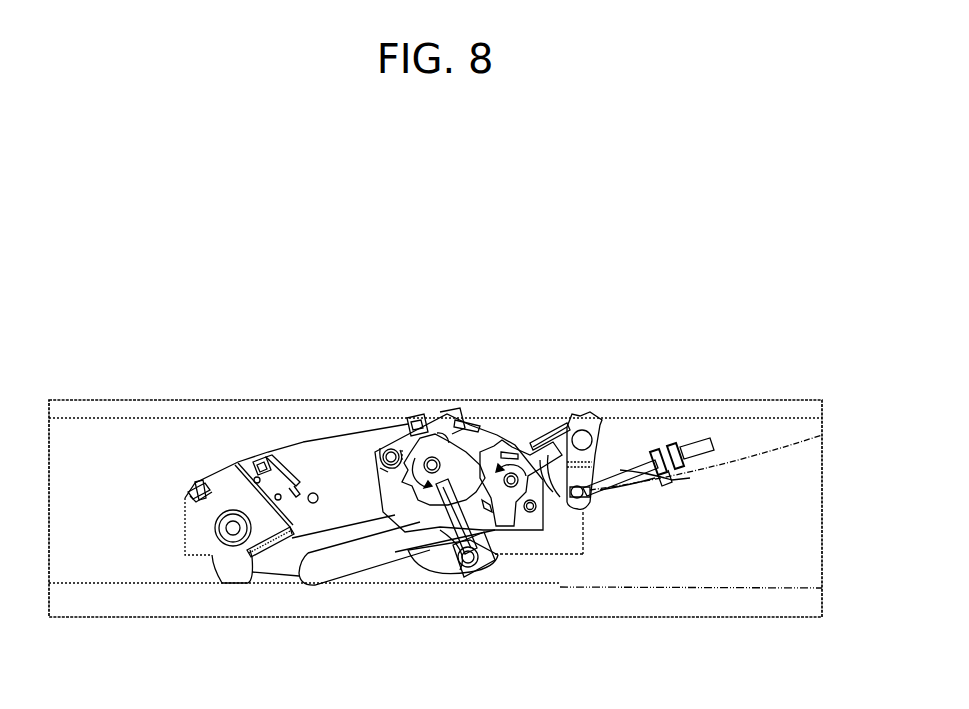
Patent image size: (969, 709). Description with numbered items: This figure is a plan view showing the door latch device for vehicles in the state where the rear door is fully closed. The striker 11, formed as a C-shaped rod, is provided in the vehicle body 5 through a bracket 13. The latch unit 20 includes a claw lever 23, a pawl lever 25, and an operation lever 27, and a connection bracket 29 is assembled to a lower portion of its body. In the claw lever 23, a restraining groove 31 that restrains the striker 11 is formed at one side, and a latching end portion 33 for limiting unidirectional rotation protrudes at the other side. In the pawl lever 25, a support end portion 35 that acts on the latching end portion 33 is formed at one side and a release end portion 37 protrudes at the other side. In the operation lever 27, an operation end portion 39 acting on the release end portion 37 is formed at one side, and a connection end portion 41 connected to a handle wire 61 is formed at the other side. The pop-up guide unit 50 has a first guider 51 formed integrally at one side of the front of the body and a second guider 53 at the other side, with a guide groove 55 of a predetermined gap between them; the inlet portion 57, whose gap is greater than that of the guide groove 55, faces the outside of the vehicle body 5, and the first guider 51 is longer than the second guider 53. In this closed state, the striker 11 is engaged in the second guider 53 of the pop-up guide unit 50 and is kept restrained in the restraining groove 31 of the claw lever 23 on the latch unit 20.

The vehicle body 5 is at (107, 568).
The pop-up guide unit 50 is at (233, 457).
The first guider 51 is at (290, 457).
The guide groove 55 is at (341, 528).
The second guider 53 is at (343, 555).
The inlet portion 57 is at (280, 575).
The claw lever 23 is at (437, 442).
The latching end portion 33 is at (470, 440).
The support end portion 35 is at (494, 440).
The pawl lever 25 is at (510, 445).
The operation end portion 39 is at (548, 420).
The operation lever 27 is at (613, 416).
The connection end portion 41 is at (594, 503).
The release end portion 37 is at (563, 480).
The connection bracket 29 is at (638, 484).
The handle wire 61 is at (630, 448).
The restraining groove 31 is at (430, 530).
The bracket 13 is at (440, 562).
The striker 11 is at (470, 568).
The latch unit 20 is at (525, 558).